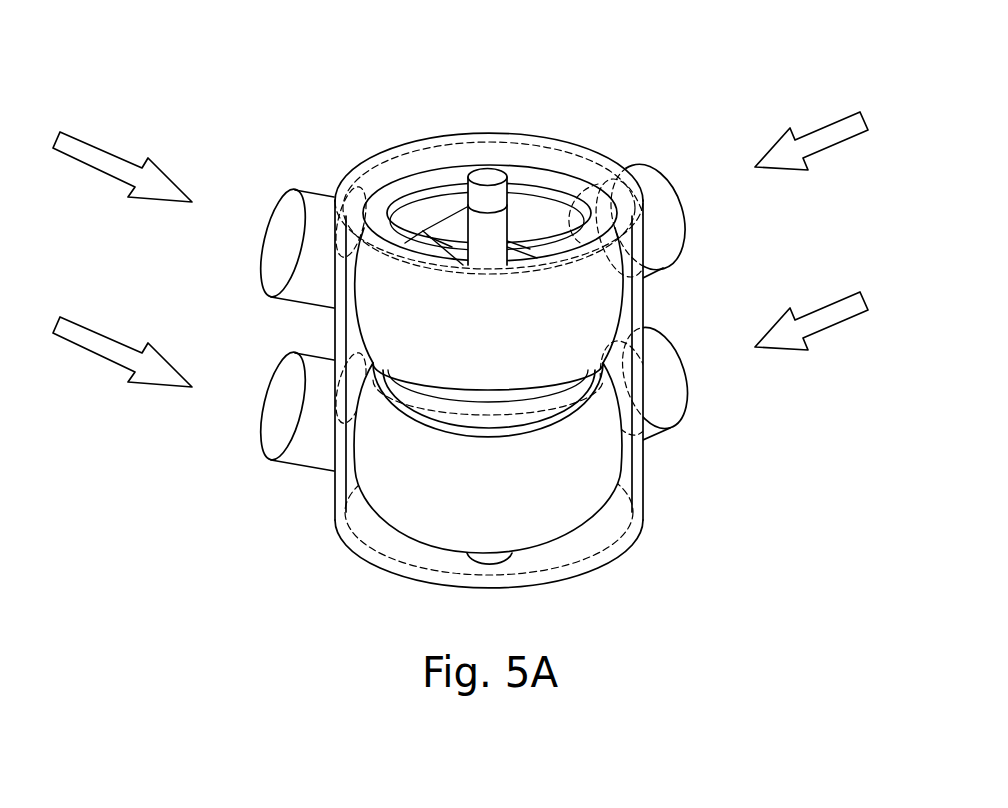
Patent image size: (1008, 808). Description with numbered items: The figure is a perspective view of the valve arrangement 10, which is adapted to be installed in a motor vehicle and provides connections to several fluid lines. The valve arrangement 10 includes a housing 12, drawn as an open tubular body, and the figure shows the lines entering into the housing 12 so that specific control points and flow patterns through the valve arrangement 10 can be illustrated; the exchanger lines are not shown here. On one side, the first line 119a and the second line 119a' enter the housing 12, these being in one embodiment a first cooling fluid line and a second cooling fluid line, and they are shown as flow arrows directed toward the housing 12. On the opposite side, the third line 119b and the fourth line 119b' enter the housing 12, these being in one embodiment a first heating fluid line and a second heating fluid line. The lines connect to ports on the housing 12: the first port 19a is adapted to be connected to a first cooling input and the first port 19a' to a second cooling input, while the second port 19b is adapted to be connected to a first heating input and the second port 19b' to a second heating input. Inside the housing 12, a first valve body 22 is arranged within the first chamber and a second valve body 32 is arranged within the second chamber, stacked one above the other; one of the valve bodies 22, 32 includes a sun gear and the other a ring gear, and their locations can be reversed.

The valve arrangement 10 is at (588, 140).
The housing 12 is at (502, 132).
The first port 19a is at (646, 204).
The first port 19a' is at (678, 403).
The second port 19b is at (292, 226).
The second port 19b' is at (276, 422).
The first valve body 22 is at (432, 207).
The second valve body 32 is at (590, 455).
The first line 119a is at (811, 109).
The second line 119a' is at (811, 292).
The third line 119b is at (122, 132).
The fourth line 119b' is at (122, 320).